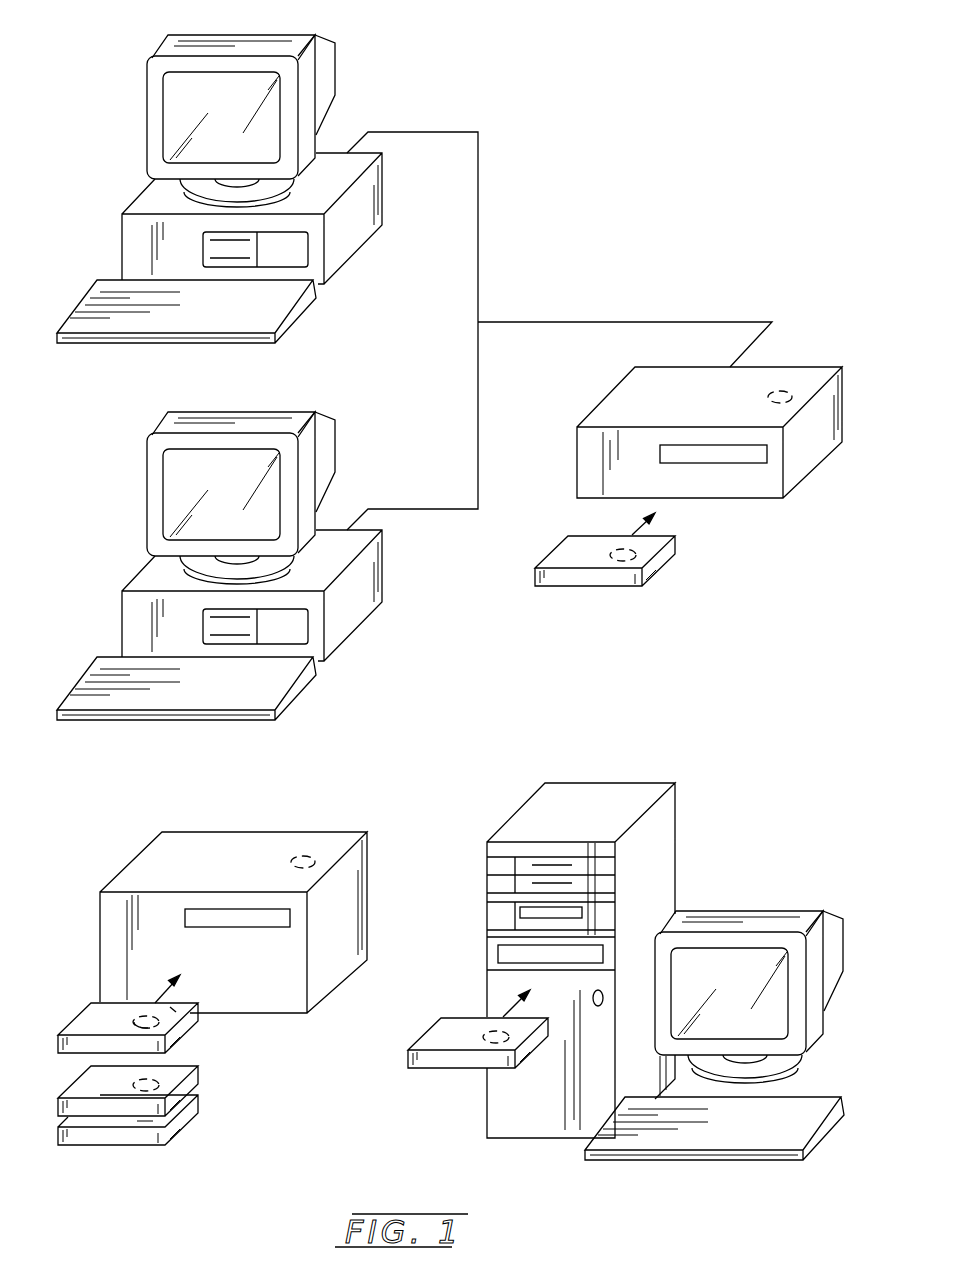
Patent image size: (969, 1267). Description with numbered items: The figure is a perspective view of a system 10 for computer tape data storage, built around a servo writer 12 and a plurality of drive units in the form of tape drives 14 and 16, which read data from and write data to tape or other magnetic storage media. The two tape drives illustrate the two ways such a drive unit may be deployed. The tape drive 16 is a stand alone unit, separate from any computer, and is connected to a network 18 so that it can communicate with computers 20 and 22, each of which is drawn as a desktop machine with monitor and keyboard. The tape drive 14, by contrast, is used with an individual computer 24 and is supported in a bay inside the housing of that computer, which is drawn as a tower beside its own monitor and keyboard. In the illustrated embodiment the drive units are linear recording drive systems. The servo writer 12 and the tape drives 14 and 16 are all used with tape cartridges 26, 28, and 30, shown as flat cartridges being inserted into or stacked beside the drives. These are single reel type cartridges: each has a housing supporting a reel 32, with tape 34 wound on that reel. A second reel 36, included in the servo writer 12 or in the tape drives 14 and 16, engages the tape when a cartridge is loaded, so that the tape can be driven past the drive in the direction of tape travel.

The system 10 is at (104, 47).
The servo writer 12 is at (113, 878).
The tape drive 14 is at (493, 957).
The tape drive 16 is at (588, 415).
The network 18 is at (478, 202).
The computer 20 is at (132, 202).
The computer 22 is at (132, 579).
The individual computer 24 is at (547, 813).
The tape cartridge 26 is at (90, 1020).
The tape cartridge 28 is at (662, 567).
The tape cartridge 30 is at (182, 1122).
The reel 32 is at (135, 1022).
The tape 34 is at (175, 1010).
The second reel 36 is at (790, 388).